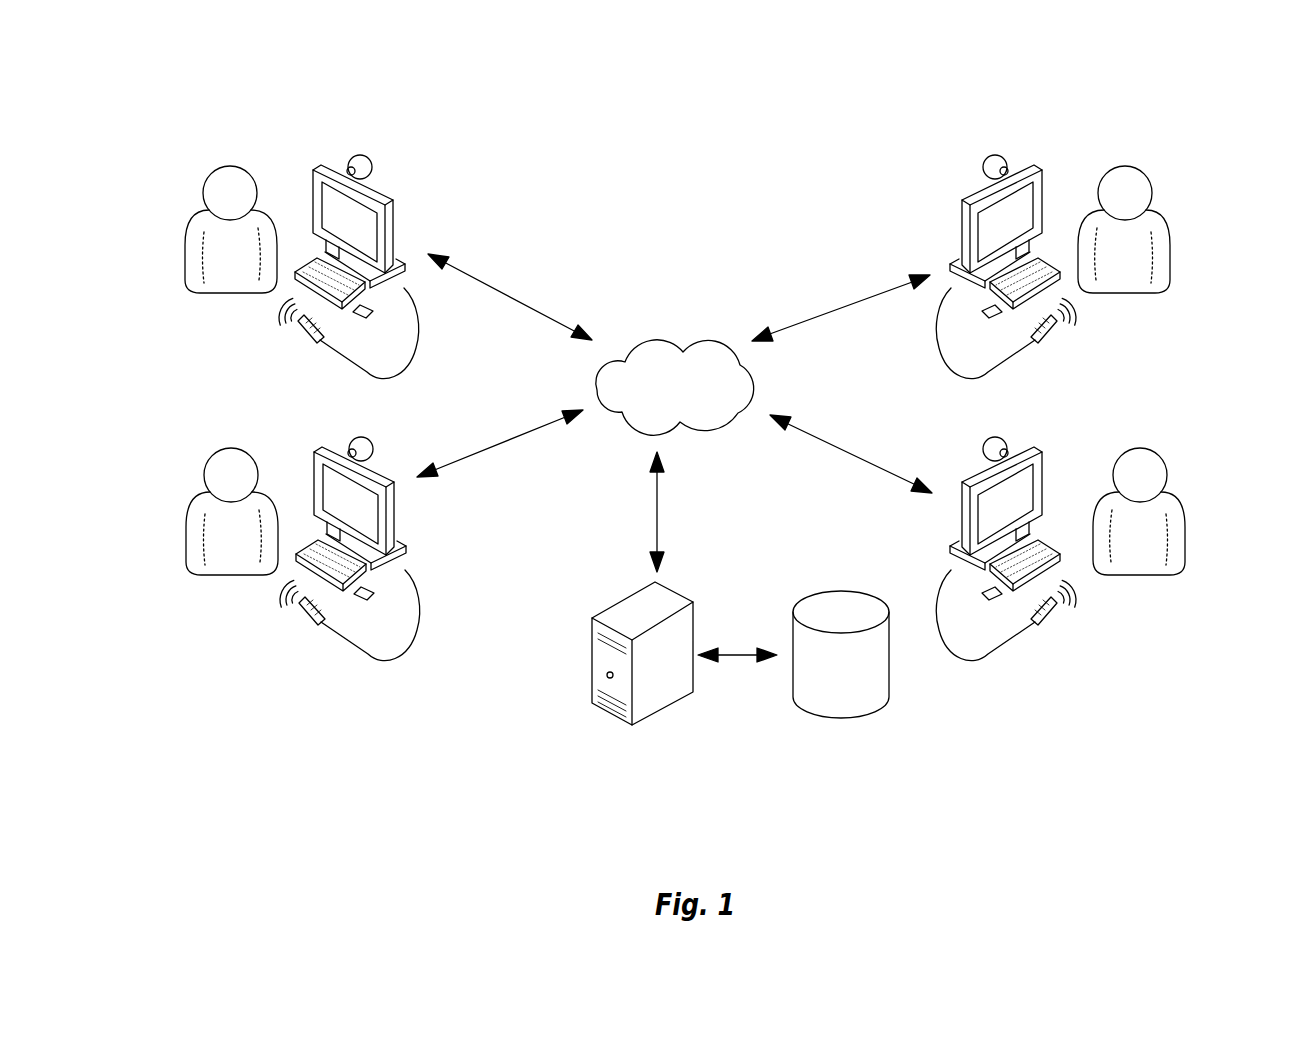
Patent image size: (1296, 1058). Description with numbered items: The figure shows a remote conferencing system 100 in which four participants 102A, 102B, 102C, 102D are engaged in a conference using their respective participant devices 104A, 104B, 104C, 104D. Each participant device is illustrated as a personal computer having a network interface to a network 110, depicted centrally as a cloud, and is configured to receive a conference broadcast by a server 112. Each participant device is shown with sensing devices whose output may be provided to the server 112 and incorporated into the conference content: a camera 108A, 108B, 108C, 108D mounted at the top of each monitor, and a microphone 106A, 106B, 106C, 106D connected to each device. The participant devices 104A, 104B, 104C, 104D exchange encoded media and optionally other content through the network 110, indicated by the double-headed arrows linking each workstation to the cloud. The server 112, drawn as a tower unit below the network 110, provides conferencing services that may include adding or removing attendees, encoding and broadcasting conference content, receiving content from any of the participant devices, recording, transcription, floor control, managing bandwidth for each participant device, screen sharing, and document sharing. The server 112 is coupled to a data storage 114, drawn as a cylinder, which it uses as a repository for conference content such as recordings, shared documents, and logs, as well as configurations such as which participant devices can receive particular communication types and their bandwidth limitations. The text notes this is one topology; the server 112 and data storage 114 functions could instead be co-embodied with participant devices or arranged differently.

The system 100 is at (1192, 73).
The participant 102A is at (197, 217).
The participant 102B is at (198, 498).
The participant 102C is at (1167, 213).
The participant 102D is at (1188, 500).
The participant device 104A is at (391, 197).
The participant device 104B is at (392, 479).
The participant device 104C is at (1026, 168).
The participant device 104D is at (1026, 453).
The microphone 106A is at (312, 342).
The microphone 106B is at (313, 625).
The microphone 106C is at (1031, 335).
The microphone 106D is at (1019, 633).
The camera 108A is at (367, 157).
The camera 108B is at (369, 440).
The camera 108C is at (988, 159).
The camera 108D is at (986, 445).
The network 110 is at (705, 338).
The server 112 is at (605, 604).
The data storage 114 is at (893, 660).